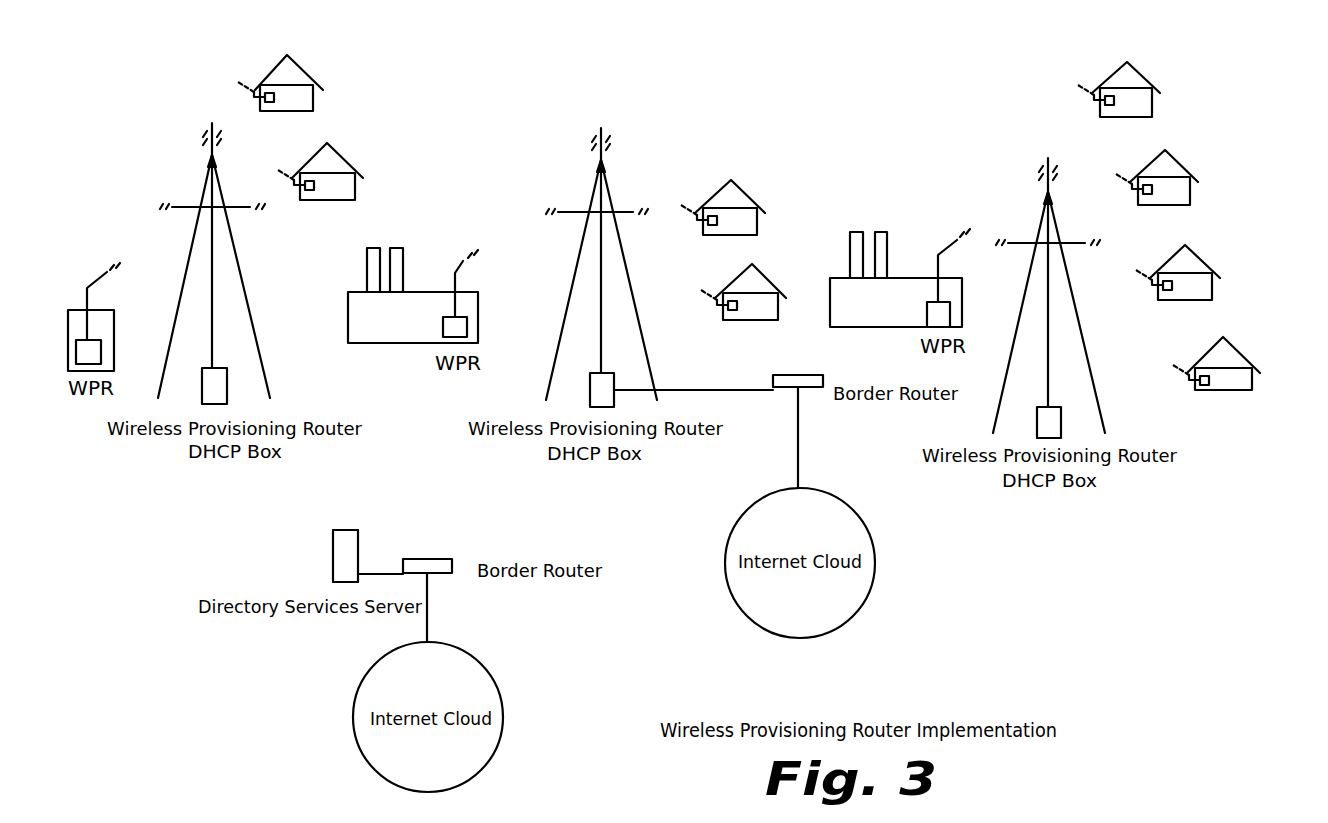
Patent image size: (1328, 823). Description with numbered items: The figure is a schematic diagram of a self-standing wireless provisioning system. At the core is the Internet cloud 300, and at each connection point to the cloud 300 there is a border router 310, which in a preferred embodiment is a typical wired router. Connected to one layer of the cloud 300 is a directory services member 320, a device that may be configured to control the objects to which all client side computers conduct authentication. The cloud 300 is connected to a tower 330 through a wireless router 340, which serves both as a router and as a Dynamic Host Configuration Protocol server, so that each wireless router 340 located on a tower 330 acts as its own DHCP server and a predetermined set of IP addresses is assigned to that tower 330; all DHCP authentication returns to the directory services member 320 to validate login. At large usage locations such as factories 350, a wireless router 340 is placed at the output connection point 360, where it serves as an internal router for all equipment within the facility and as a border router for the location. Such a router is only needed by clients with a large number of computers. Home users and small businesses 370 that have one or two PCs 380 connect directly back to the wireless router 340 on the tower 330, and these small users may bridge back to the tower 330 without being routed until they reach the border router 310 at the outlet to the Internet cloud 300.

The cloud 300 is at (840, 618).
The border router 310 is at (810, 390).
The directory services member 320 is at (352, 545).
The tower 330 is at (618, 137).
The wireless router 340 is at (590, 390).
The factory 350 is at (438, 292).
The output connection point 360 is at (462, 262).
The home users and small businesses 370 is at (1170, 58).
The PC 380 is at (1225, 390).